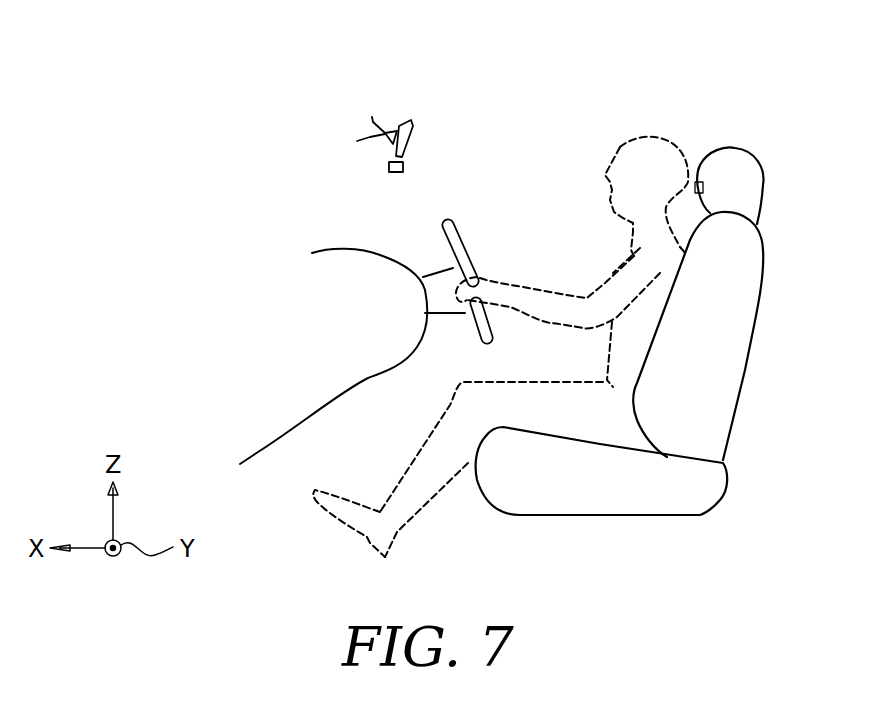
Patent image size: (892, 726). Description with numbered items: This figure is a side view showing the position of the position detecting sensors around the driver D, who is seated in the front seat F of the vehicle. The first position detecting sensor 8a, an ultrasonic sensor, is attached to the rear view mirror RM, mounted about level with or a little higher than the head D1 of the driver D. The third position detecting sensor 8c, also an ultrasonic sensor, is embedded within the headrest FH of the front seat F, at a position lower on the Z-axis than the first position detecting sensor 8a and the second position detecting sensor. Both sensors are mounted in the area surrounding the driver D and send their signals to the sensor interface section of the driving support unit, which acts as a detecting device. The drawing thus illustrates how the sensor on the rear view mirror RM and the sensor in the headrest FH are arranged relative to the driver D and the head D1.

The rear view mirror RM is at (405, 119).
The first position detecting sensor 8a is at (400, 173).
The head of the driver D1 is at (658, 135).
The third position detecting sensor 8c is at (705, 188).
The headrest FH is at (765, 192).
The driver D is at (552, 288).
The front seat F is at (753, 337).